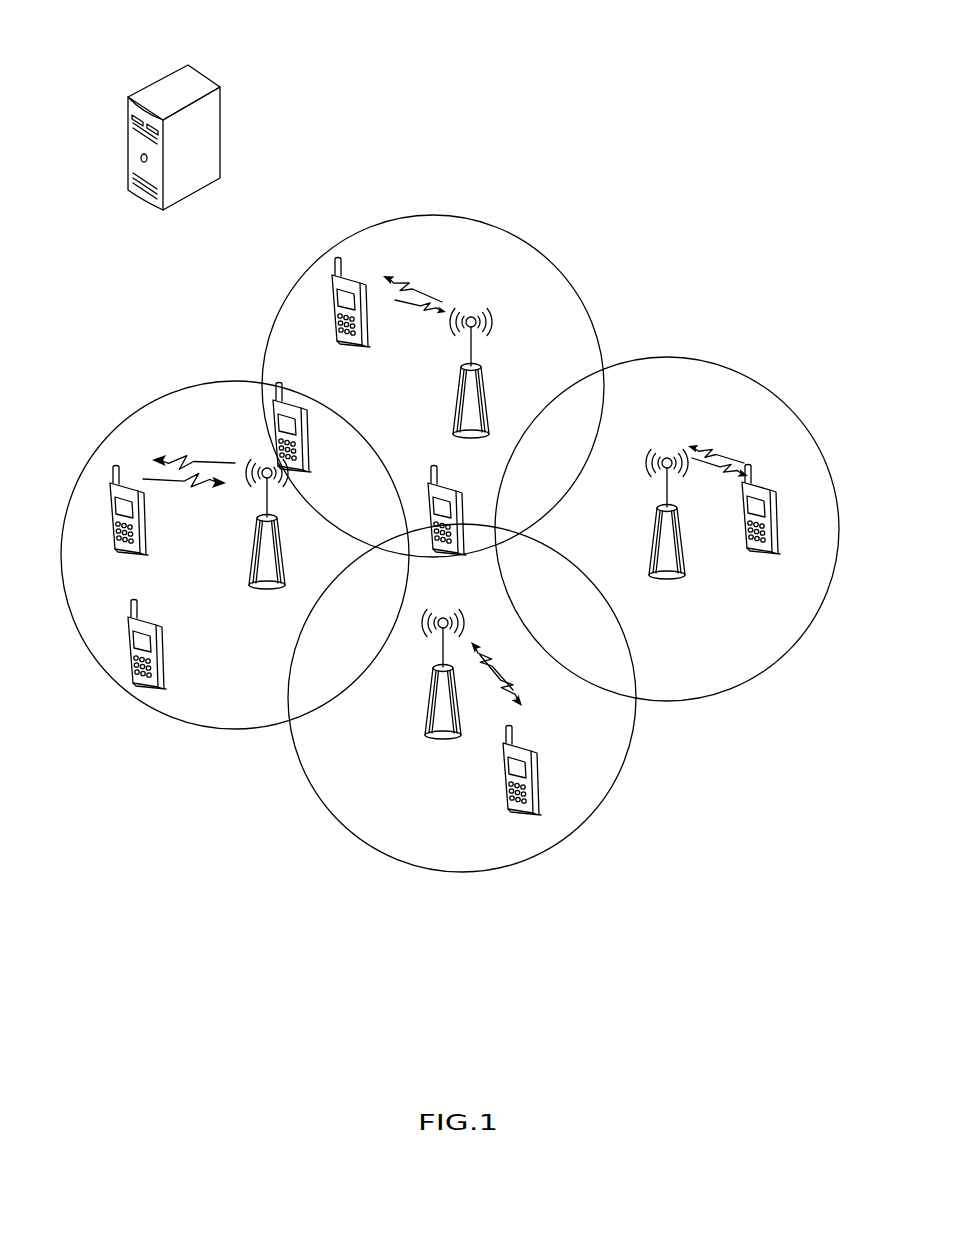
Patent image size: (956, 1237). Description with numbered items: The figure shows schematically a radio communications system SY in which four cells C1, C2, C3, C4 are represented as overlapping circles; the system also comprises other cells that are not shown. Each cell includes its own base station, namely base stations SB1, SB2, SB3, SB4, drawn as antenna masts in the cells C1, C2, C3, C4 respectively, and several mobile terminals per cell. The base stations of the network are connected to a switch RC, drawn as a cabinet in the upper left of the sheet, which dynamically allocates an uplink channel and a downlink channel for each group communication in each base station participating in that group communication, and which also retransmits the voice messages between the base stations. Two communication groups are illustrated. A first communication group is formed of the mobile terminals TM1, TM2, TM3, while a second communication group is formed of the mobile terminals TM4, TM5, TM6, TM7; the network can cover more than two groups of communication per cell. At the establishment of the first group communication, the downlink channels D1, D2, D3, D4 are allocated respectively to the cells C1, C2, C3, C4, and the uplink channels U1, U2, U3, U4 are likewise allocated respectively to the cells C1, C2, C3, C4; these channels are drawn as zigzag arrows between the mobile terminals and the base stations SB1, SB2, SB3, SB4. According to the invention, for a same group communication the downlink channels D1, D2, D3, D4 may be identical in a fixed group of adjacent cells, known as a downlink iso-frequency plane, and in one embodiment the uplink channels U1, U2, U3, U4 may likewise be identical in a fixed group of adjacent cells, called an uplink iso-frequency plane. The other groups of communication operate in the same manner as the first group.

The radio communications system SY is at (562, 84).
The switch RC is at (223, 130).
The cell C1 is at (140, 703).
The cell C2 is at (517, 237).
The cell C3 is at (732, 368).
The cell C4 is at (432, 868).
The base station SB1 is at (263, 588).
The base station SB2 is at (483, 385).
The base station SB3 is at (672, 578).
The base station SB4 is at (430, 736).
The mobile terminal TM1 is at (132, 552).
The mobile terminal TM2 is at (167, 658).
The mobile terminal TM3 is at (348, 343).
The mobile terminal TM4 is at (308, 473).
The mobile terminal TM5 is at (505, 792).
The mobile terminal TM6 is at (758, 552).
The mobile terminal TM7 is at (465, 508).
The downlink channel D1 is at (193, 451).
The uplink channel U1 is at (185, 489).
The downlink channel D2 is at (413, 310).
The uplink channel U2 is at (416, 287).
The downlink channel D3 is at (715, 446).
The uplink channel U3 is at (720, 473).
The downlink channel D4 is at (499, 666).
The uplink channel U4 is at (492, 680).